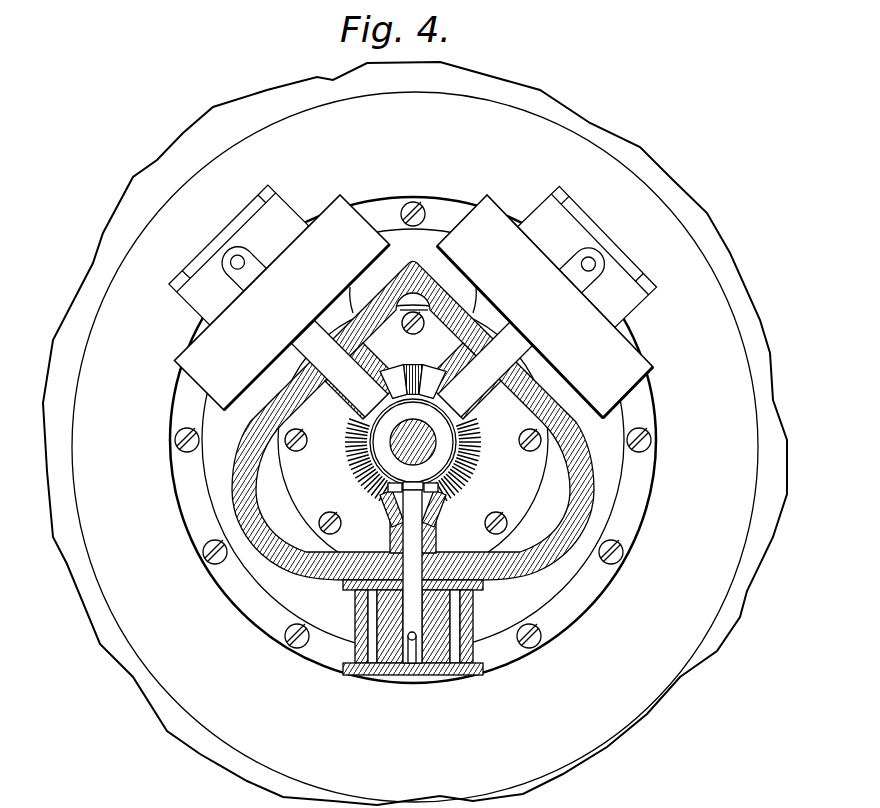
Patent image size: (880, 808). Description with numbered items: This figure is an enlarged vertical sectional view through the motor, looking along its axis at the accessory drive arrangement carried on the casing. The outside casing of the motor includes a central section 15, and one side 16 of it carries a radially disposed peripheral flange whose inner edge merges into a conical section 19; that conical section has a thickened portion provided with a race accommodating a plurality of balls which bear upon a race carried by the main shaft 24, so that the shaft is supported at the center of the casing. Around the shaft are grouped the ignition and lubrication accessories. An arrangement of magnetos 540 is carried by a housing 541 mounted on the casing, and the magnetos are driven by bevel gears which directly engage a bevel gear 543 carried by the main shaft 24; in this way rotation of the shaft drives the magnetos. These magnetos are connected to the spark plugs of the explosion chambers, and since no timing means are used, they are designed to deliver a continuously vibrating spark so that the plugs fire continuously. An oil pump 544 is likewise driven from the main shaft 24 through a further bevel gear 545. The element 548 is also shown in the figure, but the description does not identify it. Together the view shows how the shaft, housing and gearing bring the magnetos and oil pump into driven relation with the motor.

The central section 15 is at (703, 586).
The side of casing 16 is at (753, 571).
The conical section 19 is at (610, 501).
The main shaft 24 is at (442, 450).
The magnetos 540 is at (285, 218).
The housing 541 is at (580, 471).
The bevel gear 543 is at (372, 462).
The oil pump 544 is at (355, 603).
The bevel gear 545 is at (434, 506).
The stop block 548 is at (432, 364).